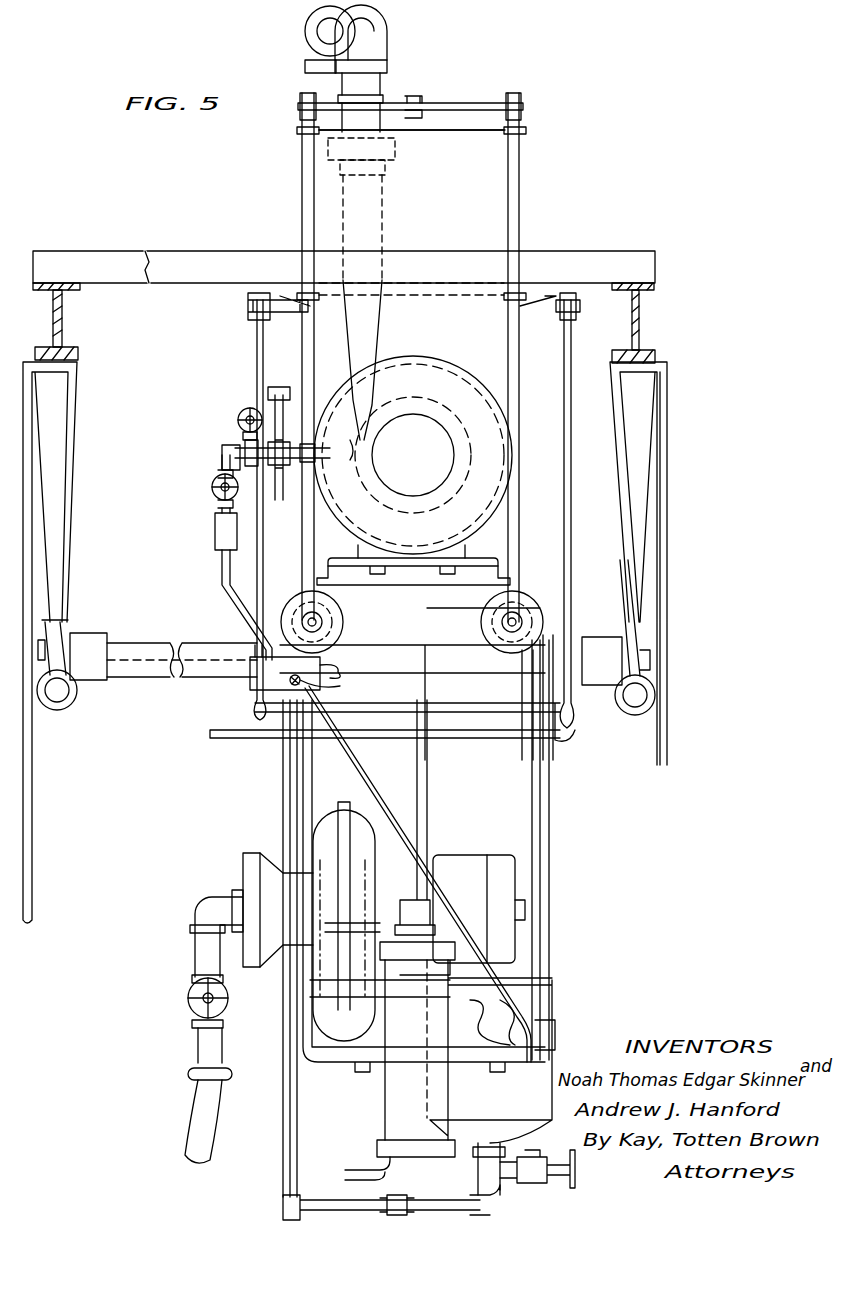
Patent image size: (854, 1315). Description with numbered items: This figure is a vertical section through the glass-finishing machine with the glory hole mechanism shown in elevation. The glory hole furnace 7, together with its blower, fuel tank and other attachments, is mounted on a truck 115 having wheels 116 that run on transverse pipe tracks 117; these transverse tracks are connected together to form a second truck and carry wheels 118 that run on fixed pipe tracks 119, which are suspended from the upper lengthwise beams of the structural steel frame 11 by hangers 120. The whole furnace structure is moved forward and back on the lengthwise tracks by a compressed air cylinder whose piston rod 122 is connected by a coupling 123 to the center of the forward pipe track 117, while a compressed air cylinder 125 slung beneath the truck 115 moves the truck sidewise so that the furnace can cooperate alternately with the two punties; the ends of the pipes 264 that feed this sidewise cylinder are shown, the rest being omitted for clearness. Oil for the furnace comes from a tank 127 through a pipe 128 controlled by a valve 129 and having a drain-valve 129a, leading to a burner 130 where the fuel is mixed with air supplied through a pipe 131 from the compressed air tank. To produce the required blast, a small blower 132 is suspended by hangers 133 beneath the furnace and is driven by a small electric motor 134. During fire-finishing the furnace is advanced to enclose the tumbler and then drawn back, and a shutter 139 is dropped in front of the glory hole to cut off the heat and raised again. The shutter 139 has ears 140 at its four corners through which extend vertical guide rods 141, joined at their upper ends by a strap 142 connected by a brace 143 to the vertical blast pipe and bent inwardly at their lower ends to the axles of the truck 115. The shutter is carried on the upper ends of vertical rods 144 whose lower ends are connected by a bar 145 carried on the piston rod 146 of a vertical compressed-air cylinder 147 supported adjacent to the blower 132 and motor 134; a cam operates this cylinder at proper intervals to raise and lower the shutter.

The glory hole furnace 7 is at (415, 362).
The structural steel frame 11 is at (53, 320).
The truck 115 is at (400, 588).
The wheels 116 is at (300, 604).
The transverse pipe tracks 117 is at (208, 656).
The wheels 118 is at (60, 636).
The fixed pipe tracks 119 is at (57, 710).
The hangers 120 is at (50, 485).
The piston rod 122 is at (340, 668).
The coupling 123 is at (340, 688).
The compressed air cylinder 125 is at (372, 645).
The tank 127 is at (549, 912).
The pipe 128 is at (142, 677).
The valve 129 is at (212, 487).
The drain-valve 129a is at (535, 1152).
The burner 130 is at (248, 452).
The pipe 131 is at (290, 400).
The blower 132 is at (330, 820).
The hangers 133 is at (283, 787).
The electric motor 134 is at (460, 852).
The shutter 139 is at (490, 165).
The ears 140 is at (297, 131).
The guide rods 141 is at (302, 193).
The strap 142 is at (455, 103).
The brace 143 is at (412, 96).
The vertical rods 144 is at (290, 548).
The bar 145 is at (457, 712).
The piston rod 146 is at (427, 782).
The compressed-air cylinder 147 is at (385, 1100).
The pipes 264 is at (218, 738).